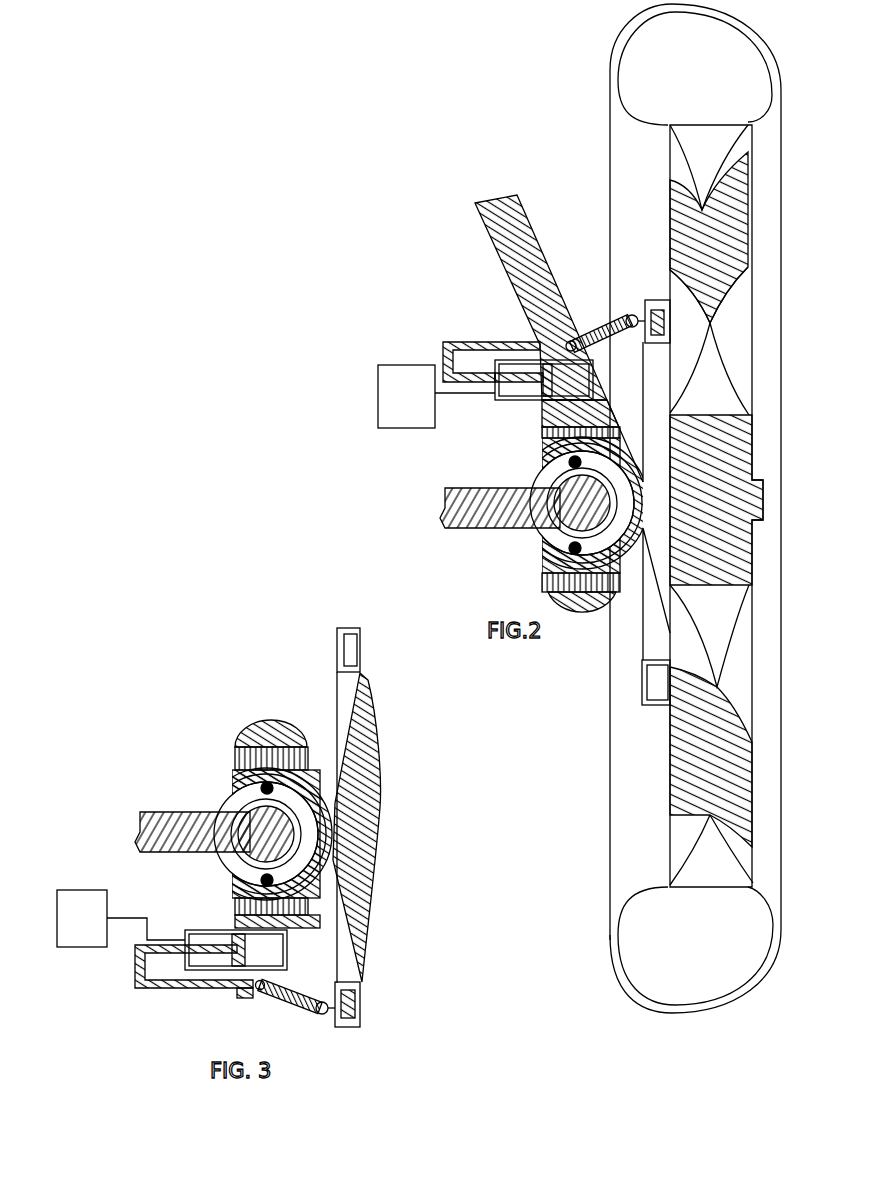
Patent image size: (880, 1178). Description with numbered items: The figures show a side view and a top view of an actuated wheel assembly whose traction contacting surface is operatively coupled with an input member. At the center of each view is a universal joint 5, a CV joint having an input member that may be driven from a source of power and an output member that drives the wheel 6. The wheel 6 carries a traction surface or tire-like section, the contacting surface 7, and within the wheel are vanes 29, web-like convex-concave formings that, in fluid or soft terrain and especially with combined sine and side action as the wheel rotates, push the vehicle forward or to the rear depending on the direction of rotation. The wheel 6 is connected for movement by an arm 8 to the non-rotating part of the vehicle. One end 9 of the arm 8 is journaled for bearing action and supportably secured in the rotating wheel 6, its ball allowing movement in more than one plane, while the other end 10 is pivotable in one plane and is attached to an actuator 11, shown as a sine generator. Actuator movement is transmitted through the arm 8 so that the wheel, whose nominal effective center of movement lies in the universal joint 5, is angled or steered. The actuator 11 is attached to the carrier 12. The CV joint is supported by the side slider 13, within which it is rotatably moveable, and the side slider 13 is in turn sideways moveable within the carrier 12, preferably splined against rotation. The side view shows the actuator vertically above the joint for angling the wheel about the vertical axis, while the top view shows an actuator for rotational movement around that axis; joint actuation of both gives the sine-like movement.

In FIG. 2, the universal joint 5 is at (582, 514).
In FIG. 3, the universal joint 5 is at (271, 845).
In FIG. 2, the wheel 6 is at (752, 458).
In FIG. 2, the contacting surface 7 is at (757, 46).
In FIG. 2, the arm 8 is at (598, 334).
In FIG. 3, the arm 8 is at (283, 999).
In FIG. 2, the end of the arm 9 is at (632, 326).
In FIG. 3, the end of the arm 9 is at (320, 1018).
In FIG. 2, the end attached to actuator 10 is at (575, 343).
In FIG. 3, the end attached to actuator 10 is at (262, 990).
In FIG. 2, the actuator 11 is at (516, 400).
In FIG. 3, the actuator 11 is at (213, 975).
In FIG. 2, the carrier 12 is at (500, 257).
In FIG. 3, the carrier 12 is at (235, 735).
In FIG. 2, the side slider 13 is at (540, 580).
In FIG. 3, the side slider 13 is at (232, 908).
In FIG. 2, the vanes 29 is at (680, 152).